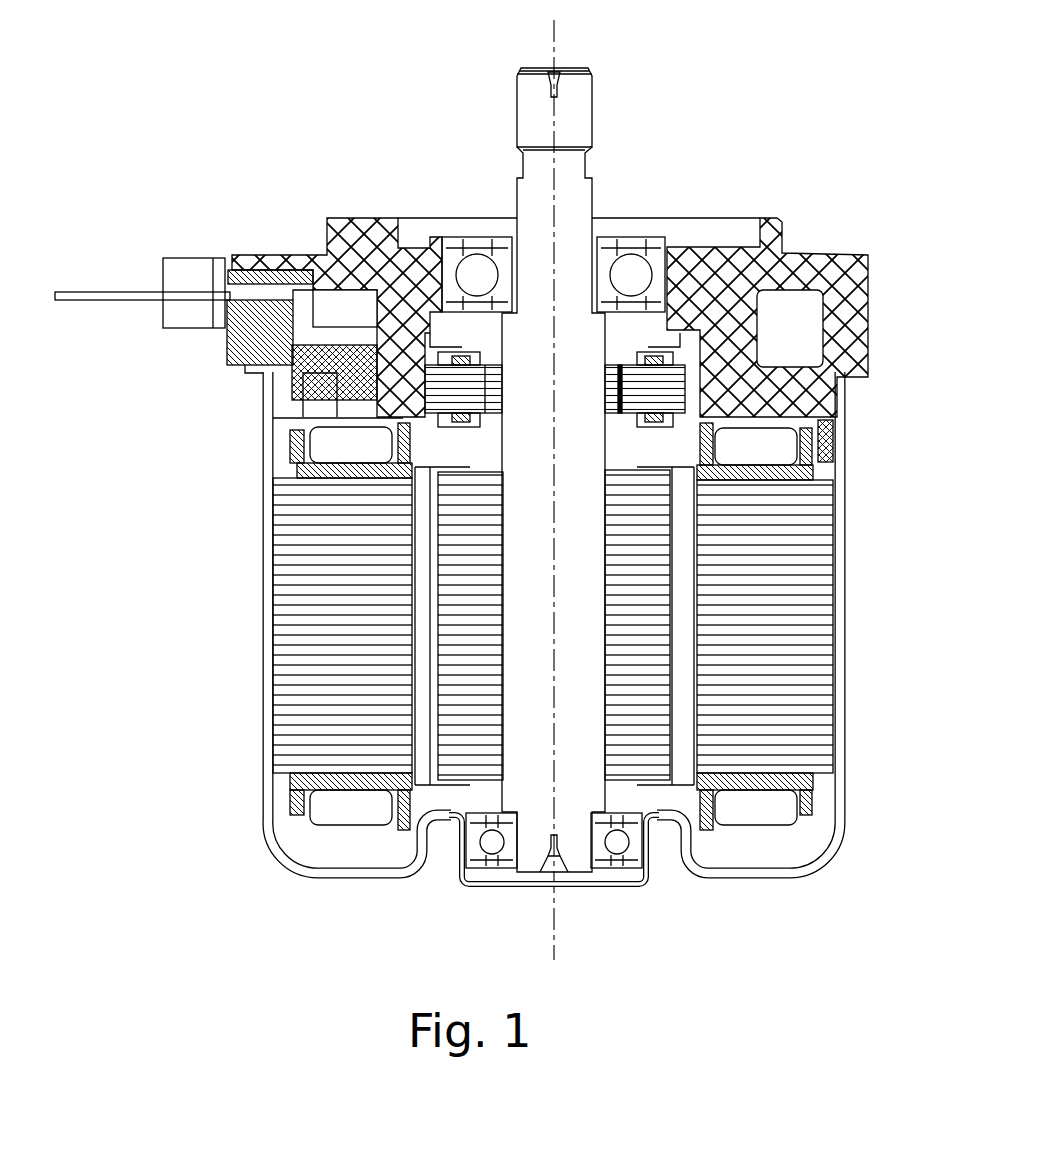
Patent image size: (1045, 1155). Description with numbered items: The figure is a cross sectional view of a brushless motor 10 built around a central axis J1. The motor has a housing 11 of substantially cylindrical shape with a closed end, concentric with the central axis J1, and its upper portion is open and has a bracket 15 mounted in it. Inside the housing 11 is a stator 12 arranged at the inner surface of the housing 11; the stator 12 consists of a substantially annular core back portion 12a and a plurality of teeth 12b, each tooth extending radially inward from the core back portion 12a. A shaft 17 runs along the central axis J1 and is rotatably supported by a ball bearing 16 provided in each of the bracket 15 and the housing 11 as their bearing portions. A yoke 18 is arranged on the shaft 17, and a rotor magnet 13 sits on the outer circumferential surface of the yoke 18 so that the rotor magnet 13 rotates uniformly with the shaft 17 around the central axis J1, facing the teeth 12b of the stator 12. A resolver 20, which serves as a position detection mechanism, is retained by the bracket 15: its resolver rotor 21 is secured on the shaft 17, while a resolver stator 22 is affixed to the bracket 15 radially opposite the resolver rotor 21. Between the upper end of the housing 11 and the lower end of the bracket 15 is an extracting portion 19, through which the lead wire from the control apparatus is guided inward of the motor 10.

The brushless motor 10 is at (808, 194).
The housing 11 is at (839, 847).
The stator 12 is at (508, 677).
The core back portion 12a is at (294, 552).
The teeth 12b is at (350, 653).
The rotor magnet 13 is at (425, 770).
The bracket 15 is at (350, 226).
The ball bearing 16 is at (633, 243).
The shaft 17 is at (573, 210).
The yoke 18 is at (658, 742).
The extracting portion 19 is at (250, 367).
The resolver 20 is at (488, 344).
The resolver rotor 21 is at (617, 372).
The resolver stator 22 is at (467, 356).
The central axis J1 is at (556, 42).